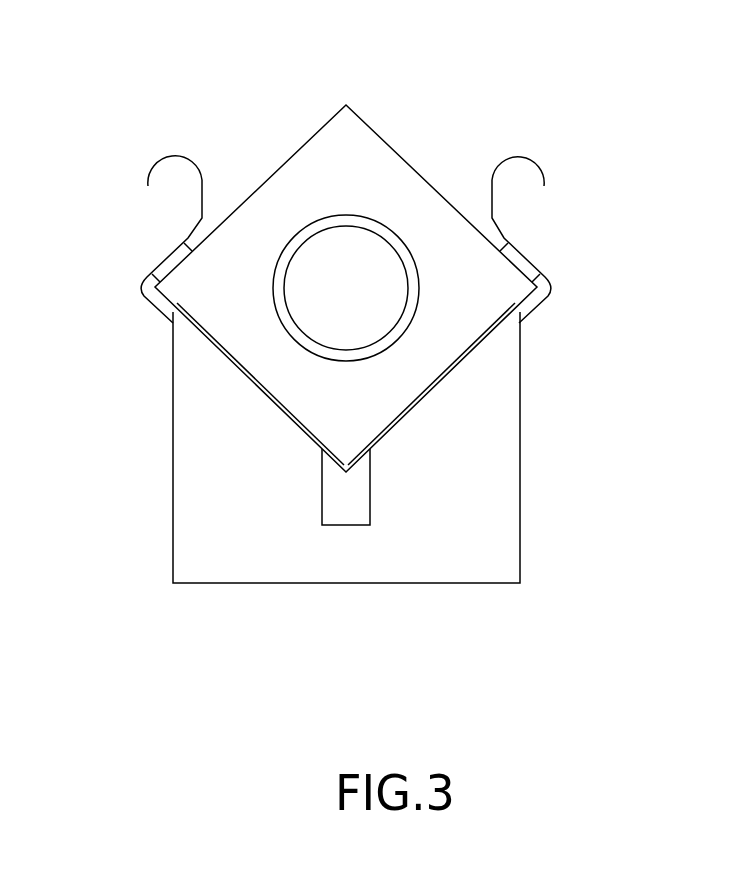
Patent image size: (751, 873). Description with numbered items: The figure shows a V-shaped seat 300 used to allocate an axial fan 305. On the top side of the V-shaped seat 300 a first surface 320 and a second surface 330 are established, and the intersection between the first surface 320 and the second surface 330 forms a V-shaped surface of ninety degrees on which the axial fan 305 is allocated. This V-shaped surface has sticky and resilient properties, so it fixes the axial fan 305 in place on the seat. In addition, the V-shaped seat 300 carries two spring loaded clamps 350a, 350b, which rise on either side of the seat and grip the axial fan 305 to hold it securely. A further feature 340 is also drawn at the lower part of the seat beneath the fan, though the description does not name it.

The V-shaped seat 300 is at (140, 517).
The axial fan 305 is at (270, 173).
The first surface 320 is at (290, 428).
The second surface 330 is at (427, 403).
The slot 340 is at (370, 499).
The spring loaded clamp 350a is at (132, 284).
The spring loaded clamp 350b is at (556, 284).